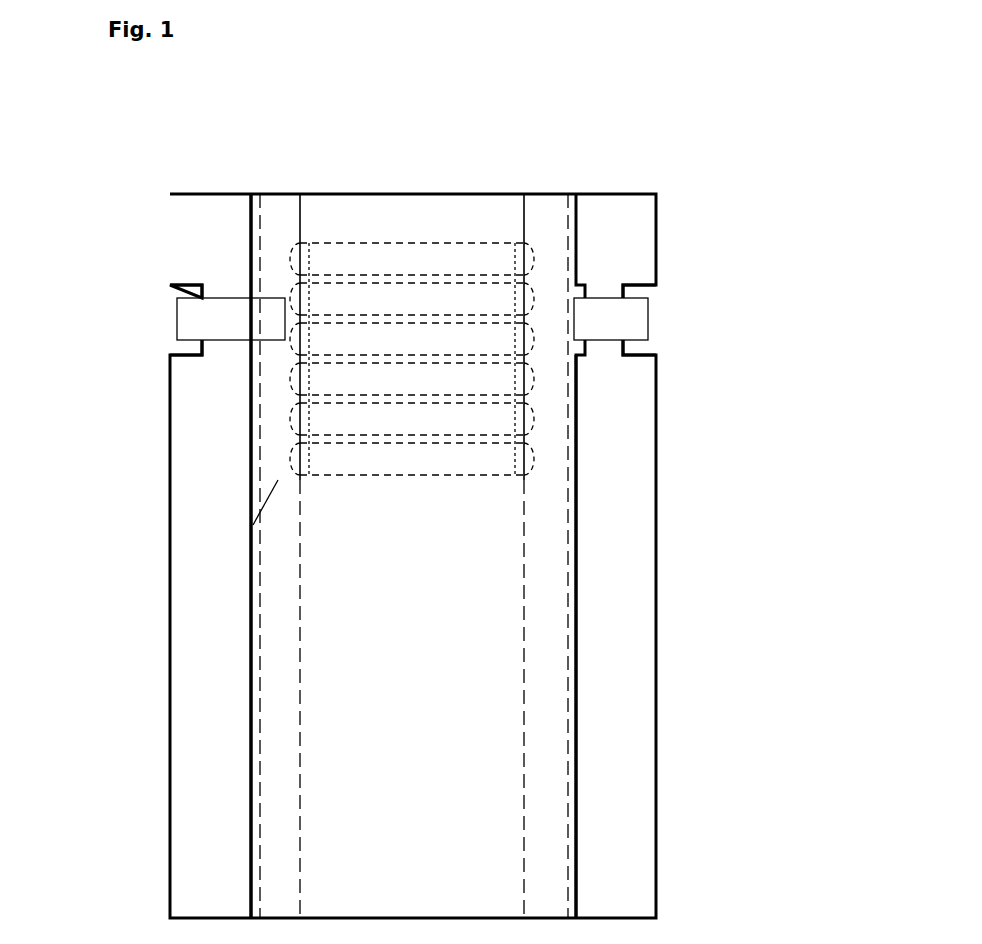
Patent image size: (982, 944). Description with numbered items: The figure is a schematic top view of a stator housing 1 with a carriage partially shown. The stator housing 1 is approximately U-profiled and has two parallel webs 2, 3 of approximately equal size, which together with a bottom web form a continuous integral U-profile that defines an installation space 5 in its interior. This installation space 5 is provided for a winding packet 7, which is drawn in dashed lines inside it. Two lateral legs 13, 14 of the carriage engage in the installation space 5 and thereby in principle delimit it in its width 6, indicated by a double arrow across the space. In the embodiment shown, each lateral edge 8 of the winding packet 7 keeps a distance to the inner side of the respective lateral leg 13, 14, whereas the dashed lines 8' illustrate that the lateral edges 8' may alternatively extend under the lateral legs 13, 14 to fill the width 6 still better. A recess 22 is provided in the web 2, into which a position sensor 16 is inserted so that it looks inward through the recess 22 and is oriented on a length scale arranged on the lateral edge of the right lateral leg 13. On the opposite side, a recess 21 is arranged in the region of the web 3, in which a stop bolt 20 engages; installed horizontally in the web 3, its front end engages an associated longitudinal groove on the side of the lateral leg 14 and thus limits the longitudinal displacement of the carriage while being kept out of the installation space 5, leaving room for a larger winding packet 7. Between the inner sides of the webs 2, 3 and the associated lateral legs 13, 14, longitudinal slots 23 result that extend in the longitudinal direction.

The stator housing 1 is at (685, 471).
The web 2 is at (617, 673).
The web 3 is at (212, 692).
The installation space 5 is at (417, 788).
The width 6 is at (300, 214).
The winding packet 7 is at (495, 262).
The lateral edge 8 is at (412, 293).
The lateral edge 8' is at (420, 333).
The lateral leg 13 is at (556, 607).
The lateral leg 14 is at (276, 625).
The position sensor 16 is at (625, 322).
The stop bolt 20 is at (226, 322).
The recess 21 is at (185, 292).
The recess 22 is at (645, 295).
The longitudinal slot 23 is at (258, 810).